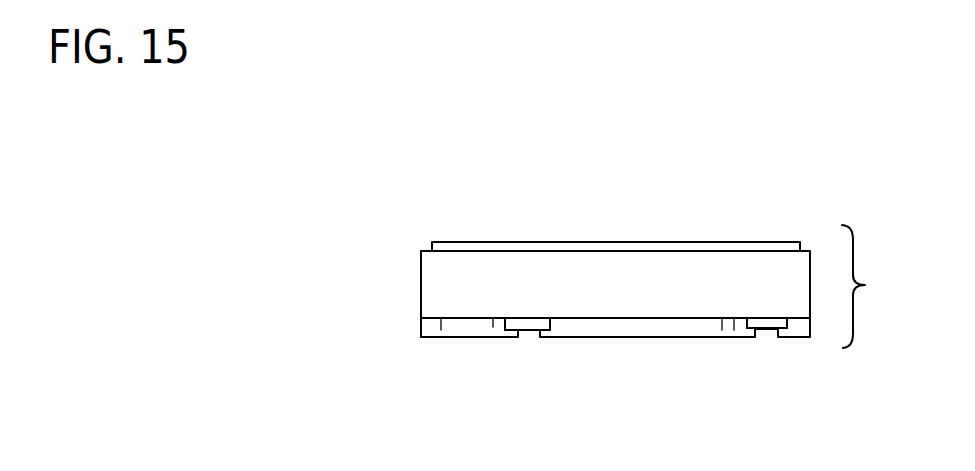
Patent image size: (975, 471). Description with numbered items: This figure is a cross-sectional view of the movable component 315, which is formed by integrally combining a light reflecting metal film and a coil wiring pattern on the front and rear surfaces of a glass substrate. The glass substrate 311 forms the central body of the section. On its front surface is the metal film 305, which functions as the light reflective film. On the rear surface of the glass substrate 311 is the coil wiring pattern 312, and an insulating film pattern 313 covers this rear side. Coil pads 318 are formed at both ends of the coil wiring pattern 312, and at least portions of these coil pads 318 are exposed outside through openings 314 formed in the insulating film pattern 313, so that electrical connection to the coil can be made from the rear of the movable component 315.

The metal film 305 is at (725, 241).
The glass substrate 311 is at (421, 269).
The coil wiring pattern 312 is at (490, 320).
The insulating film pattern 313 is at (421, 327).
The openings 314 is at (763, 333).
The movable component 315 is at (886, 286).
The coil pads 318 is at (543, 333).